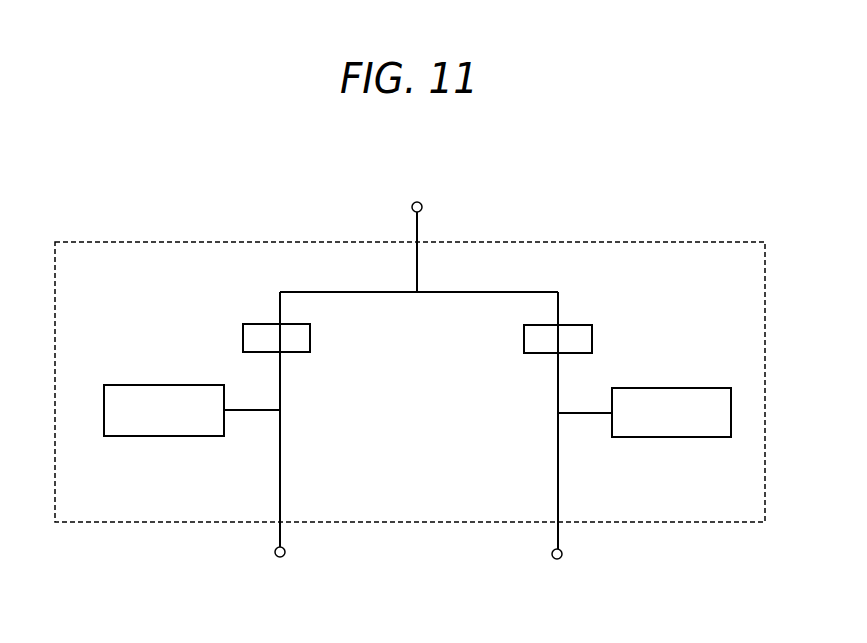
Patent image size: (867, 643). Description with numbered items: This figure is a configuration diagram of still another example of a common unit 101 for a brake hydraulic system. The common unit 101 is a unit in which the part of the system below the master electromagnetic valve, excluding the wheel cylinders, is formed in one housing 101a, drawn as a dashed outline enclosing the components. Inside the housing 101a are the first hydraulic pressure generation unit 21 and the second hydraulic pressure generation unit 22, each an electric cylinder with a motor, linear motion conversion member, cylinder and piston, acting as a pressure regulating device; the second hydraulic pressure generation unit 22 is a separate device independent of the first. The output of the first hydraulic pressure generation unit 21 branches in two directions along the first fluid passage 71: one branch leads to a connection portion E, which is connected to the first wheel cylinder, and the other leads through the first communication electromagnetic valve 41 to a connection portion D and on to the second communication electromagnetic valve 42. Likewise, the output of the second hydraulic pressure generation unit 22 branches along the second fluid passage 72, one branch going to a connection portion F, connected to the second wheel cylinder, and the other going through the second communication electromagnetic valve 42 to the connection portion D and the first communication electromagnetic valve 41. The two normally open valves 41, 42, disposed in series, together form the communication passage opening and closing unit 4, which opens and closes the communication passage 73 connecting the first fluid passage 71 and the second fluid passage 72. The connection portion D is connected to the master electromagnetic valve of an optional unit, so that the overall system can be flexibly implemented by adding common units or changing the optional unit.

The common unit 101 is at (133, 155).
The housing 101a is at (144, 241).
The communication passage opening and closing unit 4 is at (466, 415).
The first communication electromagnetic valve 41 is at (313, 345).
The second communication electromagnetic valve 42 is at (522, 343).
The first hydraulic pressure generation unit 21 is at (153, 428).
The second hydraulic pressure generation unit 22 is at (660, 426).
The first fluid passage 71 is at (277, 434).
The second fluid passage 72 is at (558, 442).
The communication passage 73 is at (342, 294).
The connection portion D is at (420, 199).
The connection portion E is at (275, 551).
The connection portion F is at (565, 556).